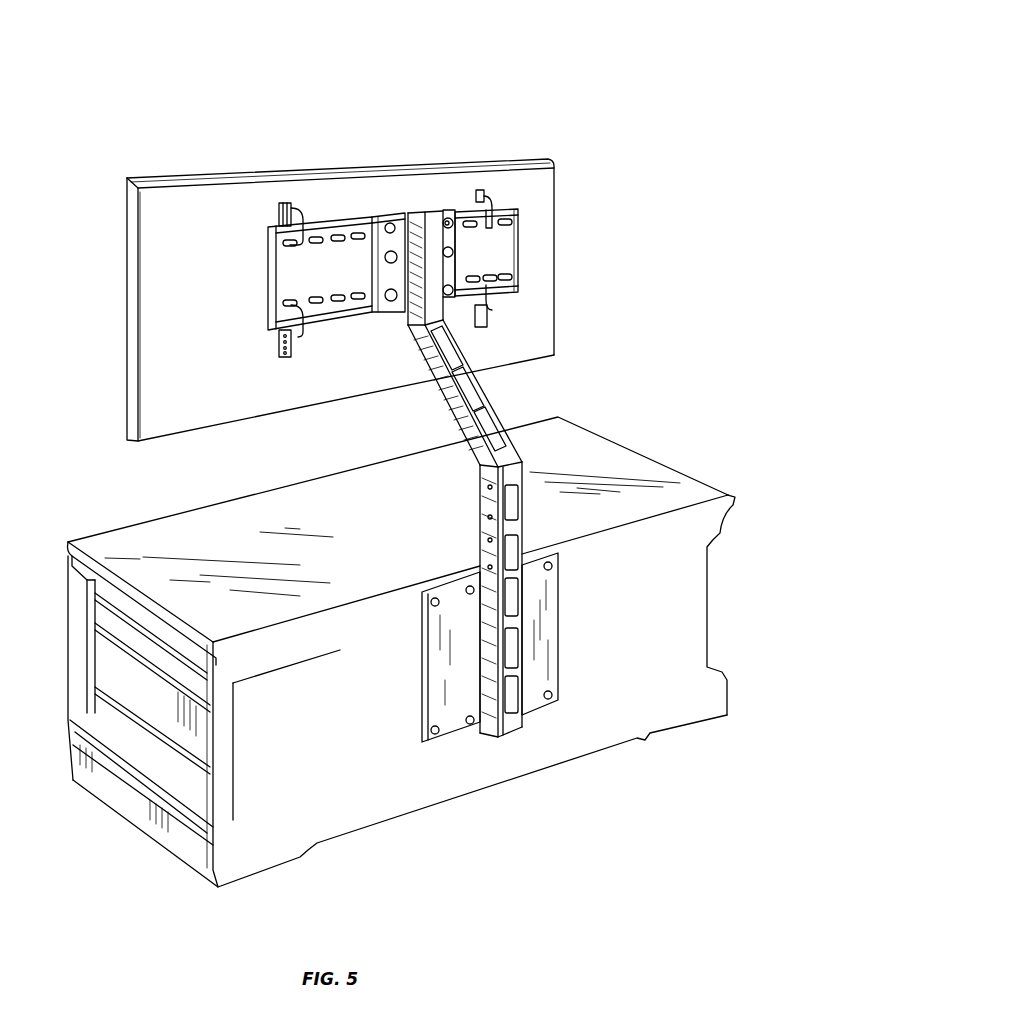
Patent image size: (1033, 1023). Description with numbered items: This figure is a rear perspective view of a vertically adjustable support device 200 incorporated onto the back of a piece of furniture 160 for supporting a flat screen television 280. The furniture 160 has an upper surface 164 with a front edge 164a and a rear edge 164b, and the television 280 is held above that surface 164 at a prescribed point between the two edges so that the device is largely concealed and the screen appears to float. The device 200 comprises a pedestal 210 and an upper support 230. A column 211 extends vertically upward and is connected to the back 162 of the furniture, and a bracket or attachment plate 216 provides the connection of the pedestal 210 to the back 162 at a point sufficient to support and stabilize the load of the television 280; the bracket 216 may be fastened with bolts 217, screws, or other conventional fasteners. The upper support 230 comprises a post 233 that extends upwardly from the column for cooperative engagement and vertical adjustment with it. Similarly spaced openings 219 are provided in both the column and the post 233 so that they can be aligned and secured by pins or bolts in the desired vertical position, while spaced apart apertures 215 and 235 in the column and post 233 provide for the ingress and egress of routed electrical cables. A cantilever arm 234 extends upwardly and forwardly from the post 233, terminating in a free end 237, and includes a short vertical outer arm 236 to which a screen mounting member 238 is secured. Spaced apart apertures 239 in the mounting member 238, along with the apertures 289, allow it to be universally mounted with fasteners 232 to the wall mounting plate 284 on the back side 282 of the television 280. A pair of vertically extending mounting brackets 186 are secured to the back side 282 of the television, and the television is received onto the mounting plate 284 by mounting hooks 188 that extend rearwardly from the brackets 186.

The piece of furniture 160 is at (659, 408).
The back of the piece of furniture 162 is at (376, 795).
The surface of the furniture 164 is at (637, 477).
The front edge 164a is at (207, 505).
The rear edge 164b is at (637, 518).
The mounting brackets 186 is at (273, 350).
The mounting hooks 188 is at (273, 222).
The vertically adjustable support device 200 is at (450, 471).
The pedestal 210 is at (477, 662).
The column 211 is at (510, 624).
The apertures 215 is at (512, 658).
The bracket or attachment plate 216 is at (545, 592).
The bolts 217 is at (437, 600).
The spaced openings 219 is at (480, 488).
The upper support 230 is at (435, 392).
The fasteners 232 is at (370, 243).
The post 233 is at (517, 468).
The cantilever arm 234 is at (473, 368).
The apertures 235 is at (462, 387).
The short vertical outer arm 236 is at (458, 228).
The free end 237 is at (430, 237).
The screen mounting member 238 is at (408, 213).
The apertures 239 is at (457, 252).
The flat screen television 280 is at (220, 104).
The back side of television 282 is at (333, 197).
The wall mounting plate 284 is at (165, 320).
The screen mounting member apertures 289 is at (350, 238).